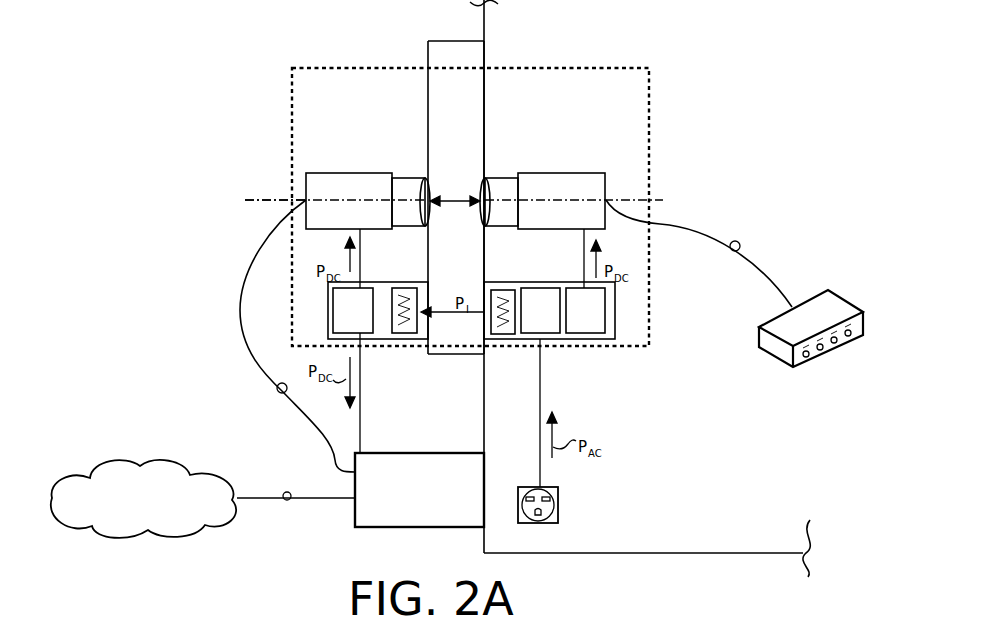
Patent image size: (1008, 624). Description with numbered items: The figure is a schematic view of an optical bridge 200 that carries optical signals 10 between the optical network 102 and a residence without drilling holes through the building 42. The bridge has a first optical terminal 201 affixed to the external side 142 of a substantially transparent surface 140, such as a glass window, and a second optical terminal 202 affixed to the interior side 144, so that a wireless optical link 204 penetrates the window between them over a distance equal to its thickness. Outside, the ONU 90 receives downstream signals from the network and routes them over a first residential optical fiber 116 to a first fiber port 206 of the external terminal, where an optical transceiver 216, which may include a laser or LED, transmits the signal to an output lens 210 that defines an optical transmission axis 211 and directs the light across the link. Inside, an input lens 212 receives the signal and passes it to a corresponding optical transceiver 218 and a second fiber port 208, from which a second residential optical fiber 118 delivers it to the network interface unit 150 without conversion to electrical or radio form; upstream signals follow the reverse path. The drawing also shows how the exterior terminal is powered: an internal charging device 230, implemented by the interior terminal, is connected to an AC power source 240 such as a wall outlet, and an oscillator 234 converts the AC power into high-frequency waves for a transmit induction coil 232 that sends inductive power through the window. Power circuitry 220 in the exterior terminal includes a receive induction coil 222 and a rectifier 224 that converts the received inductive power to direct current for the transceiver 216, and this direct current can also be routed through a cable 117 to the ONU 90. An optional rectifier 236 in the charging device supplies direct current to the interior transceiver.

The optical signal 10 is at (278, 392).
The building 42 is at (713, 118).
The ONU 90 is at (419, 490).
The optical network 102 is at (134, 463).
The first residential optical fiber 116 is at (249, 268).
The cable 117 is at (362, 405).
The second residential optical fiber 118 is at (690, 233).
The substantially transparent surface 140 is at (438, 40).
The external side 142 is at (428, 48).
The interior side 144 is at (484, 50).
The network interface unit 150 is at (794, 368).
The optical bridge 200 is at (320, 62).
The first optical terminal 201 is at (370, 103).
The second optical terminal 202 is at (560, 102).
The wireless optical link 204 is at (452, 197).
The first fiber port 206 is at (306, 194).
The second fiber port 208 is at (607, 198).
The output lens 210 is at (402, 178).
The optical transmission axis 211 is at (243, 202).
The input lens 212 is at (508, 178).
The optical transceiver 216 is at (344, 173).
The optical transceiver 218 is at (562, 173).
The power circuitry 220 is at (328, 305).
The receive induction coil 222 is at (400, 288).
The rectifier 224 is at (395, 340).
The internal charging device 230 is at (616, 309).
The transmit induction coil 232 is at (500, 341).
The oscillator 234 is at (538, 288).
The rectifier 236 is at (590, 341).
The AC power source 240 is at (558, 505).